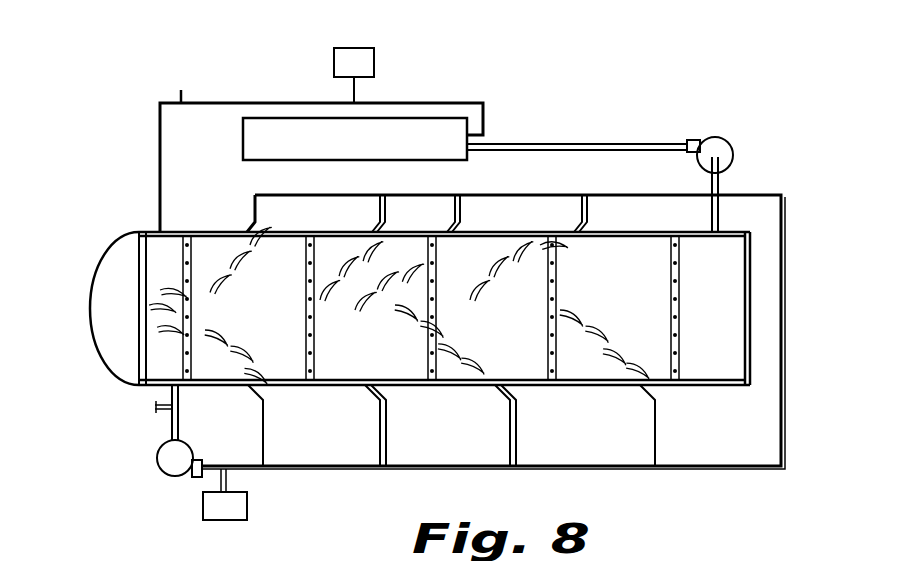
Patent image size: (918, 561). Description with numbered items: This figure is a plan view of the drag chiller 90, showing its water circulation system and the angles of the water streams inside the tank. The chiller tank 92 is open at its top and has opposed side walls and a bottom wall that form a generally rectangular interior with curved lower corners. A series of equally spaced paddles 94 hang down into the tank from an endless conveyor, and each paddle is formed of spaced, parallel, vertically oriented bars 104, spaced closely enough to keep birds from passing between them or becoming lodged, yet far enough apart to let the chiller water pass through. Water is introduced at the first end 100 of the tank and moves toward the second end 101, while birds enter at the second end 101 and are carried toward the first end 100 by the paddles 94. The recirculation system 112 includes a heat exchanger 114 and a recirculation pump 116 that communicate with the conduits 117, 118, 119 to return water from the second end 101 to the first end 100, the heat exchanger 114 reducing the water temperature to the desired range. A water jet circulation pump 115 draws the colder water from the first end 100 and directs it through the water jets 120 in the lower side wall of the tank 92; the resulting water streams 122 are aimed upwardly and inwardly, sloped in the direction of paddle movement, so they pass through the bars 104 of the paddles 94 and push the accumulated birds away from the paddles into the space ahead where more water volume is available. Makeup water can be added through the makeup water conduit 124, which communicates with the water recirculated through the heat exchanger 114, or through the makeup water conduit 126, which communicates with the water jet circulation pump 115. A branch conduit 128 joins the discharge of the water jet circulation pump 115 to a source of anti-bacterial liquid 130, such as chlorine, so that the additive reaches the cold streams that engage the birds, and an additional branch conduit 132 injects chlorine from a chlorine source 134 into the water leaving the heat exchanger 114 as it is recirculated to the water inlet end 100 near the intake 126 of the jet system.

The drag chiller 90 is at (738, 112).
The tank 92 is at (699, 396).
The paddles 94 is at (306, 256).
The first end 100 is at (136, 226).
The second end 101 is at (752, 356).
The bars 104 is at (680, 350).
The recirculation system 112 is at (588, 136).
The heat exchanger 114 is at (404, 162).
The water jet circulation pump 115 is at (161, 469).
The recirculation pump 116 is at (730, 151).
The conduit 117 is at (720, 185).
The conduit 118 is at (628, 151).
The conduit 119 is at (215, 106).
The water jets 120 is at (253, 229).
The water streams 122 is at (480, 252).
The makeup water conduit 124 is at (182, 97).
The makeup water conduit 126 is at (156, 410).
The branch conduit 128 is at (228, 480).
The source of anti-bacterial liquid 130 is at (247, 520).
The branch conduit 132 is at (357, 99).
The chlorine source 134 is at (375, 63).